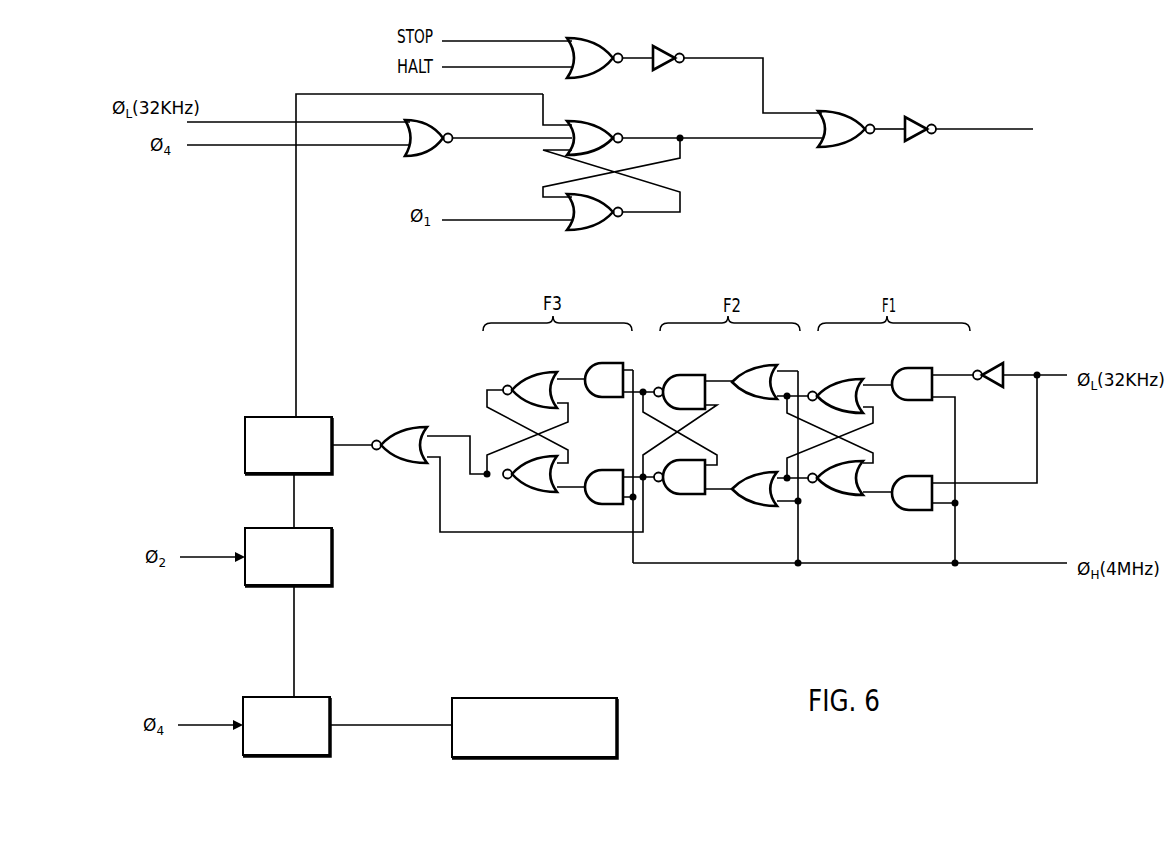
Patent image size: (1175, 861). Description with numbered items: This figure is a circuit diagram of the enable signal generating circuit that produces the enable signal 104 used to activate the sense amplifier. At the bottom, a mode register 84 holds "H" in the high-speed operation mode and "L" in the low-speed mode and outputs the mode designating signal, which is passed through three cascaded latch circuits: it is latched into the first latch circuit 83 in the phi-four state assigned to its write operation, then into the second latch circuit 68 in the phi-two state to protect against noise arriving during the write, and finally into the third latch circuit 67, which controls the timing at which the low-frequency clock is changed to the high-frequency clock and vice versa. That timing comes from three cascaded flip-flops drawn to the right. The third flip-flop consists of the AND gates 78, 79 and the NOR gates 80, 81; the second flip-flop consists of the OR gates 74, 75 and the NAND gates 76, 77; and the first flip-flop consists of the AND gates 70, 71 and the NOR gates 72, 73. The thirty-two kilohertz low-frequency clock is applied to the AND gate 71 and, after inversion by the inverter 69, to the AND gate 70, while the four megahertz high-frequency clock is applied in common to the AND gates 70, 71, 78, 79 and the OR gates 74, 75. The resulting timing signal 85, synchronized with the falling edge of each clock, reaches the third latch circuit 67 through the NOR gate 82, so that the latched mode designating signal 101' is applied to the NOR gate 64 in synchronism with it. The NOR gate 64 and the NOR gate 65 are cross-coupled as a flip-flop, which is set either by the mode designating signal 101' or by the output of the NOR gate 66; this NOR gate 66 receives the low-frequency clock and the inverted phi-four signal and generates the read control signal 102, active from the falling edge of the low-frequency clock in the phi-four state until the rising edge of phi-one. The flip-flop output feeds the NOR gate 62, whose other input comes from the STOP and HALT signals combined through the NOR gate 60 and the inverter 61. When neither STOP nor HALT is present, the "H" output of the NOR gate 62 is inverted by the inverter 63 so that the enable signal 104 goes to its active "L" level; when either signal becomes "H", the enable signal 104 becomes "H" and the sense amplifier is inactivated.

The NOR gate 60 is at (598, 42).
The inverter 61 is at (660, 47).
The NOR gate 62 is at (838, 109).
The inverter 63 is at (921, 113).
The NOR gate 64 is at (589, 118).
The NOR gate 65 is at (593, 229).
The NOR gate 66 is at (432, 119).
The third latch circuit 67 is at (330, 416).
The second latch circuit 68 is at (302, 515).
The inverter 69 is at (995, 364).
The AND gate 70 is at (928, 365).
The AND gate 71 is at (921, 513).
The NOR gate 72 is at (860, 373).
The NOR gate 73 is at (855, 503).
The OR gate 74 is at (773, 364).
The OR gate 75 is at (773, 510).
The NAND gate 76 is at (690, 357).
The NAND gate 77 is at (693, 498).
The AND gate 78 is at (613, 356).
The AND gate 79 is at (598, 507).
The NOR gate 80 is at (545, 368).
The NOR gate 81 is at (532, 494).
The NOR gate 82 is at (404, 424).
The first latch circuit 83 is at (300, 696).
The mode register 84 is at (472, 697).
The timing signal 85 is at (340, 450).
The mode designating signal 101' is at (419, 255).
The read control signal 102 is at (517, 141).
The enable signal 104 is at (963, 129).